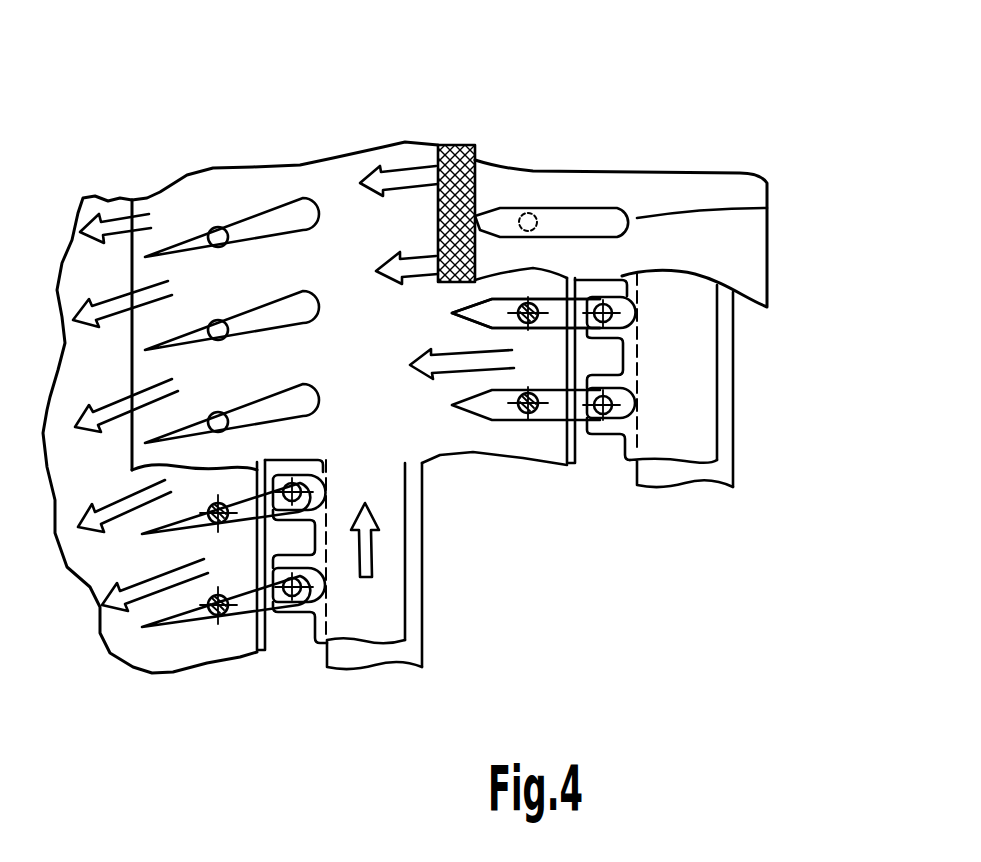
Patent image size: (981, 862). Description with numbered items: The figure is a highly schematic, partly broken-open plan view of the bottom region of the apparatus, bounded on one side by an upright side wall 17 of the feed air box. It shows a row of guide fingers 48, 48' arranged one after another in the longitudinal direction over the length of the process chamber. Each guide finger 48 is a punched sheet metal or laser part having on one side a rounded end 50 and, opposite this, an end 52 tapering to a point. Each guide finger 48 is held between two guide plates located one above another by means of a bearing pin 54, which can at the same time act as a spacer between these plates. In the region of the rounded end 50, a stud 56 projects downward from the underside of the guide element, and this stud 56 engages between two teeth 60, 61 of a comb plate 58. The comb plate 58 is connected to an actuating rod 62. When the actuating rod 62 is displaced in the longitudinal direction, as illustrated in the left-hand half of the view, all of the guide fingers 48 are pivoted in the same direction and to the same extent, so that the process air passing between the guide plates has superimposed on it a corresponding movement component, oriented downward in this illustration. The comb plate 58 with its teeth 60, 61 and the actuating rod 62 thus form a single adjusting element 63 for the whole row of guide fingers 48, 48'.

The upright side wall 17 is at (477, 163).
The guide finger 48 is at (581, 209).
The guide finger 48' is at (571, 148).
The rounded end 50 is at (767, 208).
The end tapering to a point 52 is at (437, 220).
The bearing pin 54 is at (220, 612).
The stud 56 is at (302, 603).
The comb plate 58 is at (720, 428).
The tooth 60 is at (614, 280).
The tooth 61 is at (613, 345).
The actuating rod 62 is at (417, 650).
The adjusting element 63 is at (745, 160).